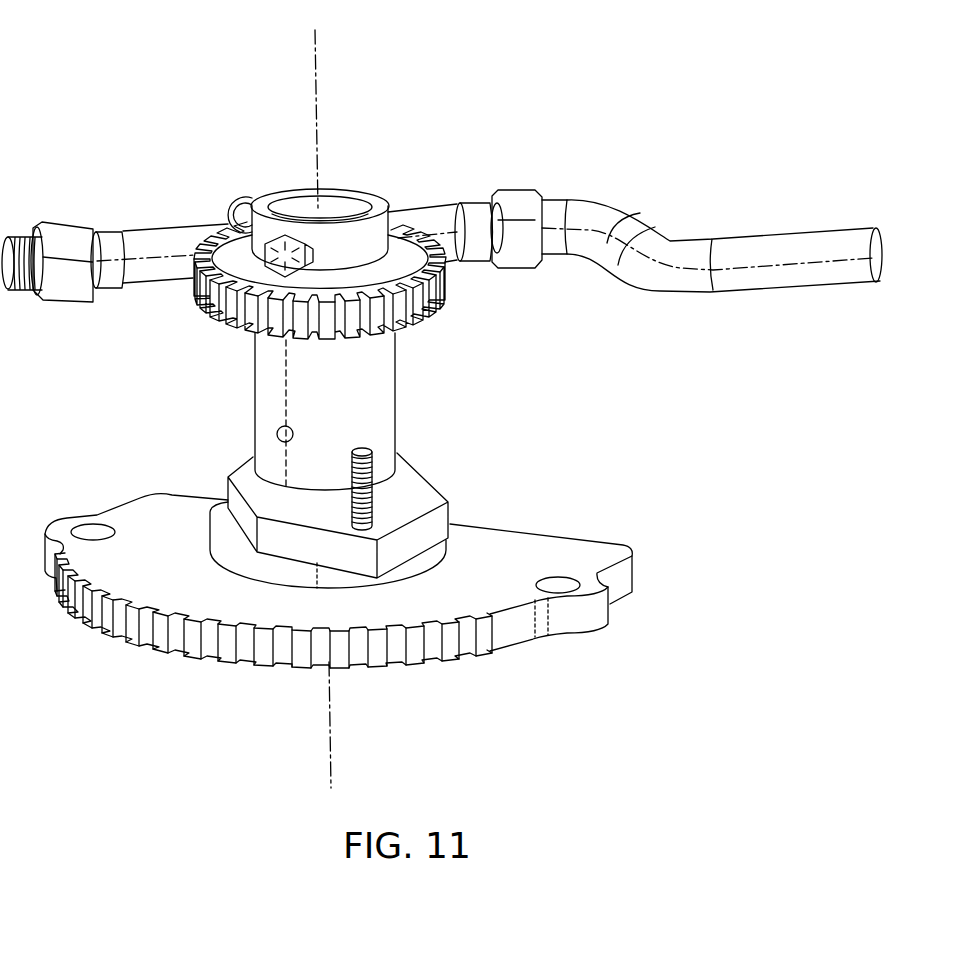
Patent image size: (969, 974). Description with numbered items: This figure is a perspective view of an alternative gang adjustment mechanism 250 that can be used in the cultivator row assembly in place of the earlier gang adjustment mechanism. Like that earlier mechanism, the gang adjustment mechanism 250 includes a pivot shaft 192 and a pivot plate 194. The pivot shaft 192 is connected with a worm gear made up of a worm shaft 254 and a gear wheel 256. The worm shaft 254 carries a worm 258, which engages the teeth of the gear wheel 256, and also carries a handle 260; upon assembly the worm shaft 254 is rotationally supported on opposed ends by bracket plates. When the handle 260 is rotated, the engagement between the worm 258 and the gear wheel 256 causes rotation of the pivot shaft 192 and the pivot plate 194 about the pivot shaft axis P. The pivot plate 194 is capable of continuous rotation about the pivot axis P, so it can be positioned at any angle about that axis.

The gang adjustment mechanism 250 is at (149, 113).
The pivot shaft axis P is at (315, 52).
The worm 258 is at (257, 193).
The worm shaft 254 is at (424, 212).
The handle 260 is at (789, 233).
The gear wheel 256 is at (196, 308).
The pivot shaft 192 is at (400, 380).
The pivot plate 194 is at (507, 633).